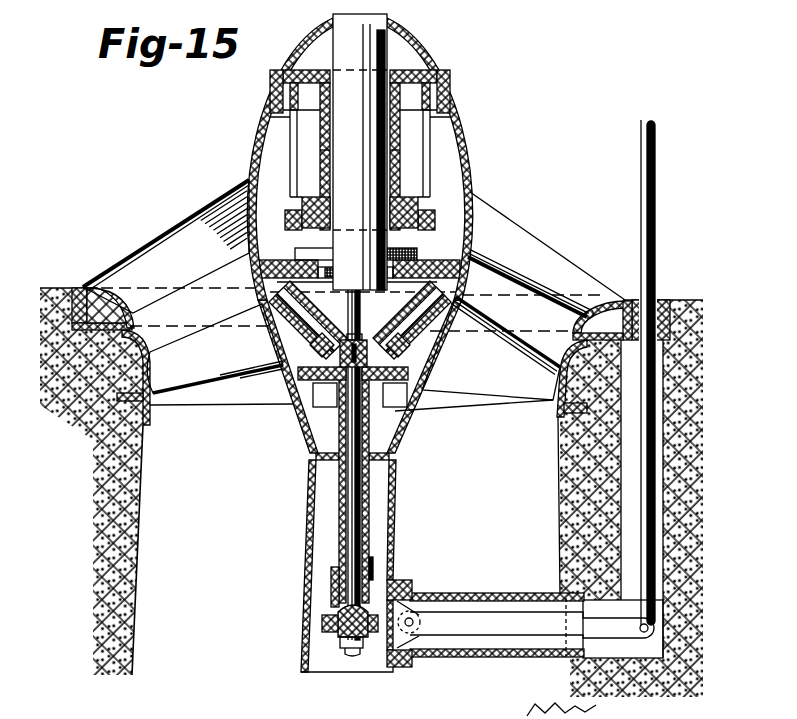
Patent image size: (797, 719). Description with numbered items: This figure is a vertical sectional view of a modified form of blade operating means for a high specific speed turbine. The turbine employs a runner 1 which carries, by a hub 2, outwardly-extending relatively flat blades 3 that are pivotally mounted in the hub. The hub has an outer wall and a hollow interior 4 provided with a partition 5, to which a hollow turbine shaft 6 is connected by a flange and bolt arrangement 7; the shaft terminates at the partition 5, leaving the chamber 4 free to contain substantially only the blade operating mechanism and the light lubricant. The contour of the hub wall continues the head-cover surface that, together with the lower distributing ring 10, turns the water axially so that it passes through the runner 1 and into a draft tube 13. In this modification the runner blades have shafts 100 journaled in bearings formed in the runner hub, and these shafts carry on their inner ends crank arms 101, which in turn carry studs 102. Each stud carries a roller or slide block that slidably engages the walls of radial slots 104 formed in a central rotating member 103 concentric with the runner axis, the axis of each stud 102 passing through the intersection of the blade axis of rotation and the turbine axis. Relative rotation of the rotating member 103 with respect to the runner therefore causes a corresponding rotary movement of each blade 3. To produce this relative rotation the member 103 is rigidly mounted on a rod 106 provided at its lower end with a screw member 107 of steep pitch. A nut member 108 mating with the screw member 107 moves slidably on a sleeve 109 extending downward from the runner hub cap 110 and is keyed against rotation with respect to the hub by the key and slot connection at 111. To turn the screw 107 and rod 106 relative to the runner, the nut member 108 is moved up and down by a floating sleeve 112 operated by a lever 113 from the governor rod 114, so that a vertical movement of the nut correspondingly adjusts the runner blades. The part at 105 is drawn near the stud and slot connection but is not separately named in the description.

The runner 1 is at (287, 377).
The hub 2 is at (252, 278).
The blades 3 is at (208, 387).
The hollow interior 4 is at (363, 320).
The partition 5 is at (458, 297).
The turbine shaft 6 is at (388, 238).
The flange and bolt arrangement 7 is at (314, 254).
The lower distributing ring 10 is at (568, 352).
The draft tube 13 is at (138, 481).
The blade shafts 100 is at (416, 305).
The crank arms 101 is at (369, 320).
The studs 102 is at (430, 373).
The central rotating member 103 is at (412, 392).
The radial slots 104 is at (432, 347).
The bar slide 105 is at (428, 362).
The rod 106 is at (357, 532).
The screw member 107 is at (354, 648).
The nut member 108 is at (340, 637).
The sleeve 109 is at (337, 544).
The runner hub cap 110 is at (398, 440).
The key and slot connection 111 is at (383, 563).
The floating sleeve 112 is at (322, 622).
The lever 113 is at (457, 627).
The governor rod 114 is at (645, 228).